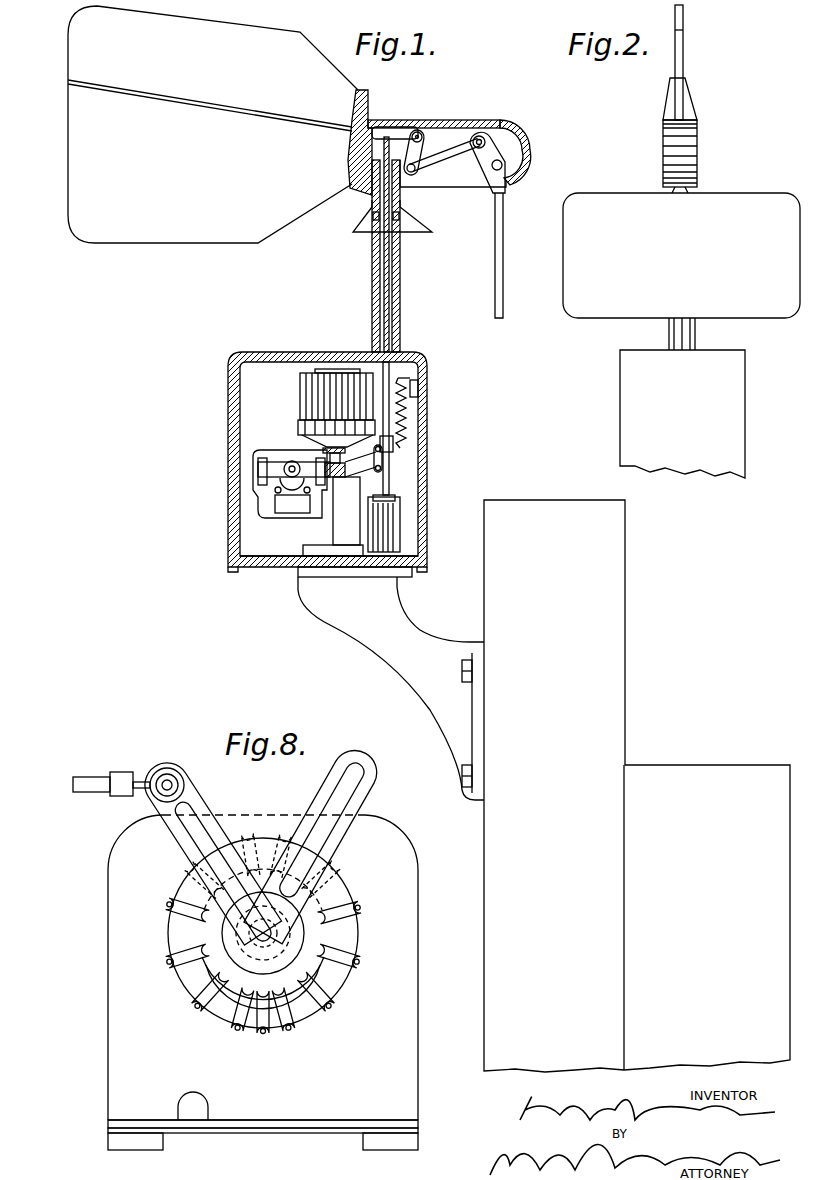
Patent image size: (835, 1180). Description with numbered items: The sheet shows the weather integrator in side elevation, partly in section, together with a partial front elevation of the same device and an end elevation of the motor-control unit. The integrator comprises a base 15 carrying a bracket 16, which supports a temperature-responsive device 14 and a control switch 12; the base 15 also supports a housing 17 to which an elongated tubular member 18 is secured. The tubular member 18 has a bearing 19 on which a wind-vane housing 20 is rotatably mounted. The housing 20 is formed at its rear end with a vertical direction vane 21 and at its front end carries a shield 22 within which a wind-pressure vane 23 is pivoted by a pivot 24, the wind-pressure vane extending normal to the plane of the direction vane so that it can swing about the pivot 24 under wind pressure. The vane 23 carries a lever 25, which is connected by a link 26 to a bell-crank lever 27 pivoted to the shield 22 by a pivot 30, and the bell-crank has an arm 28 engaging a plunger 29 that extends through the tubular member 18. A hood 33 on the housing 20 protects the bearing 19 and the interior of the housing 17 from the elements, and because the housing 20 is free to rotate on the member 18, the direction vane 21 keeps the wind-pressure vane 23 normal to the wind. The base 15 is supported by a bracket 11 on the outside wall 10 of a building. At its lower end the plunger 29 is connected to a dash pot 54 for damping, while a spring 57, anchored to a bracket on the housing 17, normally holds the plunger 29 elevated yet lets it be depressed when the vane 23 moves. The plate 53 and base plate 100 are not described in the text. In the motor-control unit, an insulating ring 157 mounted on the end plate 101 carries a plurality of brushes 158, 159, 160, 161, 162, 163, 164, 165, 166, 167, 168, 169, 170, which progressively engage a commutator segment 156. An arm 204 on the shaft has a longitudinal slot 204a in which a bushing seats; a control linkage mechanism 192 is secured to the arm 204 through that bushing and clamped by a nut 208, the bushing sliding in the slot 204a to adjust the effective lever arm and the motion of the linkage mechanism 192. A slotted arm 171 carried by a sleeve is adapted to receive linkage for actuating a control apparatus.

In FIG. 1, the outside wall 10 is at (620, 654).
In FIG. 1, the bracket 11 is at (397, 655).
In FIG. 1, the control switch 12 is at (282, 455).
In FIG. 1, the temperature-responsive device 14 is at (310, 392).
In FIG. 1, the base 15 is at (270, 565).
In FIG. 1, the bracket 16 is at (333, 531).
In FIG. 1, the housing 17 is at (230, 450).
In FIG. 2, the housing 17 is at (742, 430).
In FIG. 1, the elongated tubular member 18 is at (396, 301).
In FIG. 2, the elongated tubular member 18 is at (694, 338).
In FIG. 1, the bearing 19 is at (372, 222).
In FIG. 1, the wind-vane housing 20 is at (366, 120).
In FIG. 1, the vertical direction vane 21 is at (182, 240).
In FIG. 2, the vertical direction vane 21 is at (683, 50).
In FIG. 1, the shield 22 is at (508, 130).
In FIG. 2, the shield 22 is at (697, 158).
In FIG. 1, the wind-pressure vane 23 is at (503, 272).
In FIG. 2, the wind-pressure vane 23 is at (799, 270).
In FIG. 1, the pivot 24 is at (503, 168).
In FIG. 1, the lever 25 is at (486, 150).
In FIG. 1, the link 26 is at (450, 157).
In FIG. 1, the bell-crank lever 27 is at (418, 145).
In FIG. 1, the arm 28 is at (400, 126).
In FIG. 1, the plunger 29 is at (384, 284).
In FIG. 1, the pivot 30 is at (422, 134).
In FIG. 1, the hood 33 is at (412, 226).
In FIG. 1, the plate 53 is at (287, 508).
In FIG. 1, the dash pot 54 is at (400, 530).
In FIG. 1, the spring 57 is at (406, 419).
In FIG. 8, the base plate 100 is at (273, 1130).
In FIG. 8, the end plate 101 is at (410, 1090).
In FIG. 8, the commutator segment 156 is at (238, 985).
In FIG. 8, the insulating ring 157 is at (313, 1012).
In FIG. 8, the brush 158 is at (264, 1036).
In FIG. 8, the brush 159 is at (238, 1034).
In FIG. 8, the brush 160 is at (192, 1008).
In FIG. 8, the brush 161 is at (165, 960).
In FIG. 8, the brush 162 is at (166, 906).
In FIG. 8, the brush 163 is at (186, 866).
In FIG. 8, the brush 164 is at (247, 832).
In FIG. 8, the brush 165 is at (286, 834).
In FIG. 8, the brush 166 is at (338, 867).
In FIG. 8, the brush 167 is at (362, 908).
In FIG. 8, the brush 168 is at (361, 963).
In FIG. 8, the brush 169 is at (334, 1009).
In FIG. 8, the brush 170 is at (292, 1033).
In FIG. 8, the slotted arm 171 is at (342, 776).
In FIG. 8, the control linkage mechanism 192 is at (85, 782).
In FIG. 8, the arm 204 is at (148, 792).
In FIG. 8, the longitudinal slot 204a is at (185, 808).
In FIG. 8, the nut 208 is at (170, 772).